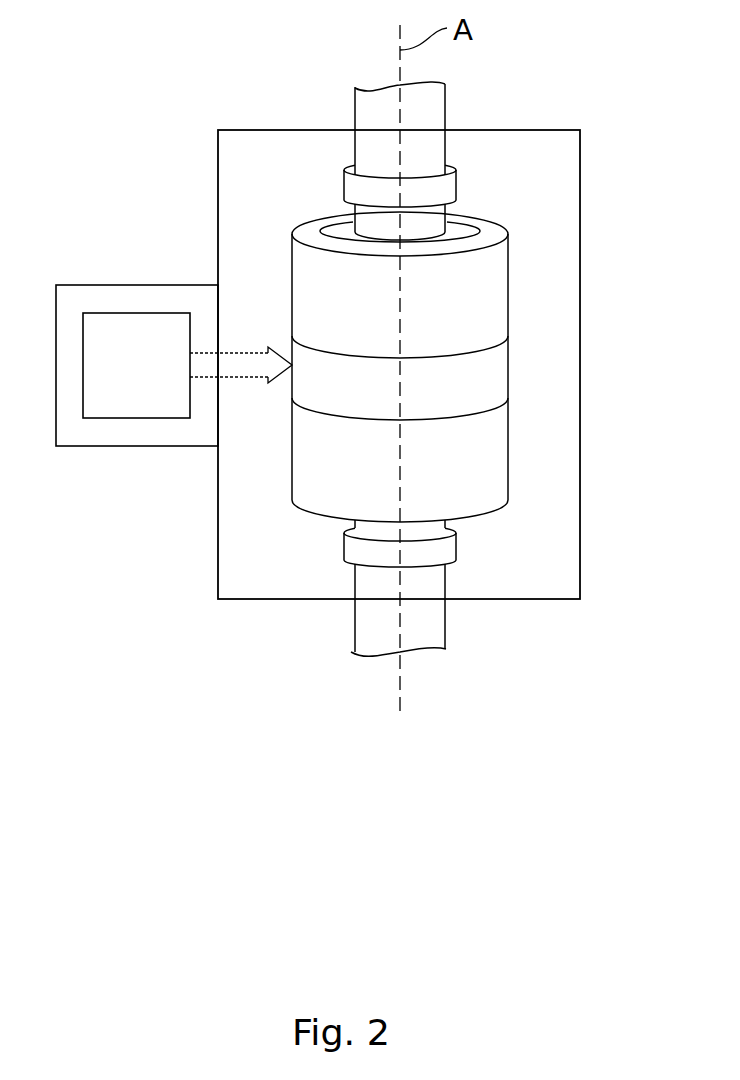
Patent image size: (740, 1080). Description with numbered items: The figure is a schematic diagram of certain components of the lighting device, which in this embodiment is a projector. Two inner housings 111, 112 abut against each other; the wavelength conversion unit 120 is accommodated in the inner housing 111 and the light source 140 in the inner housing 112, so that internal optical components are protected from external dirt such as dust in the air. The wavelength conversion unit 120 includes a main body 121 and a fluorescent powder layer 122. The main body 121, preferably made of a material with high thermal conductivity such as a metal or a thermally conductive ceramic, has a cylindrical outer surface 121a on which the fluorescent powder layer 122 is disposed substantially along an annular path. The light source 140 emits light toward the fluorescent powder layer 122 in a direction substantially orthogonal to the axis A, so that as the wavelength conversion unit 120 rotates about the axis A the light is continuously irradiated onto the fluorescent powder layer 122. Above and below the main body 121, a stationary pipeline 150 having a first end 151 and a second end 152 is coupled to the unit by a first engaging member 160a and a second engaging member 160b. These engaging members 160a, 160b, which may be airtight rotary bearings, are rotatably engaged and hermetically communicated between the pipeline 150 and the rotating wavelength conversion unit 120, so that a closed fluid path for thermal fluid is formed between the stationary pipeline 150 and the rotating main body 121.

The inner housing 111 is at (581, 147).
The inner housing 112 is at (101, 285).
The light source 140 is at (173, 313).
The wavelength conversion unit 120 is at (325, 178).
The main body 121 is at (477, 364).
The cylindrical outer surface 121a is at (495, 302).
The fluorescent powder layer 122 is at (495, 369).
The pipeline 150 is at (454, 356).
The first end 151 is at (432, 148).
The second end 152 is at (435, 582).
The first engaging member 160a is at (447, 185).
The second engaging member 160b is at (447, 547).